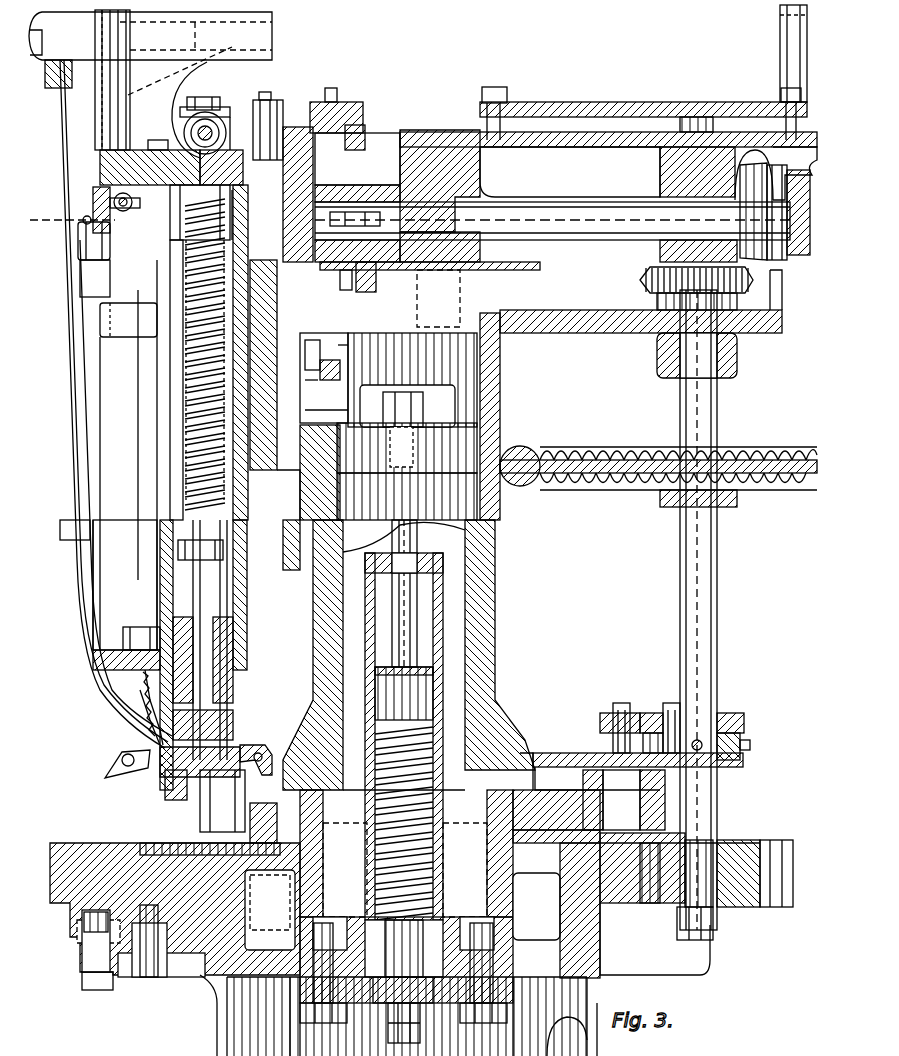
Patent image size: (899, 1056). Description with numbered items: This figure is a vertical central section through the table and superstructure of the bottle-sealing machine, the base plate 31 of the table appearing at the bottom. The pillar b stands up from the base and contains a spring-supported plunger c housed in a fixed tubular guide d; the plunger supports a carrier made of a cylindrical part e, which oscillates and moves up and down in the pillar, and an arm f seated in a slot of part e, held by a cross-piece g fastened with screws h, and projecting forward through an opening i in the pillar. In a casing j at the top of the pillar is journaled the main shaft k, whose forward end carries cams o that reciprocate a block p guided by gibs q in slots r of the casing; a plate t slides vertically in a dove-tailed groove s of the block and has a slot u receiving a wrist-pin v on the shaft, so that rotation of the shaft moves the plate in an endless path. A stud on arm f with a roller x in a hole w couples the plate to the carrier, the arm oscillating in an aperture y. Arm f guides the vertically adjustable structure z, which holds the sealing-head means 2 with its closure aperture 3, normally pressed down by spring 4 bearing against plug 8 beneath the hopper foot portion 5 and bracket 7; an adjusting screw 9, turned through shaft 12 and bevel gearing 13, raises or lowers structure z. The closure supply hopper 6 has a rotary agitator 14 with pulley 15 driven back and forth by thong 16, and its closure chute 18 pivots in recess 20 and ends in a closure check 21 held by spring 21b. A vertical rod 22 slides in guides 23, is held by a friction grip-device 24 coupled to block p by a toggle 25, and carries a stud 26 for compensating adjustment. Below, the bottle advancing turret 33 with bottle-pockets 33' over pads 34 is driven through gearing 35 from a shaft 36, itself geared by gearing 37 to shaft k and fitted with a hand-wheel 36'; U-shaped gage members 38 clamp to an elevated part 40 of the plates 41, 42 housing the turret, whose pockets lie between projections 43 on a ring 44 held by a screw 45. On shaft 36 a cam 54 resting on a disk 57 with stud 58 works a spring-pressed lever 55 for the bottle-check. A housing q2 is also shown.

The sealing-head-including means 2 is at (228, 690).
The aperture 3 is at (170, 762).
The spring 4 is at (185, 404).
The foot portion 5 is at (140, 172).
The closure supply hopper 6 is at (207, 62).
The bracket 7 is at (232, 160).
The plug 8 is at (161, 212).
The adjusting screw 9 is at (214, 100).
The shaft 12 is at (200, 128).
The bevel gearing 13 is at (235, 112).
The rotary closure agitator 14 is at (80, 62).
The pulley 15 is at (55, 80).
The thong 16 is at (62, 193).
The closure chute 18 is at (98, 492).
The recess 20 is at (125, 213).
The closure check 21 is at (126, 770).
The spring 21b is at (146, 704).
The vertical rod 22 is at (140, 595).
The guides 23 is at (123, 632).
The grip-device 24 is at (115, 285).
The toggle 25 is at (165, 330).
The stud 26 is at (92, 262).
The base plate 31 is at (78, 845).
The bottle advancing turret 33 is at (270, 910).
The bottle-pockets 33' is at (210, 829).
The pads 34 is at (170, 905).
The gearing 35 is at (665, 915).
The shaft 36 is at (712, 610).
The hand-wheel 36' is at (658, 482).
The gearing 37 is at (755, 282).
The U-shaped members 38 is at (247, 790).
The elevated part 40 is at (600, 798).
The plate 41 is at (540, 920).
The plate 42 is at (556, 753).
The radial projections 43 is at (192, 778).
The ring 44 is at (556, 816).
The screw 45 is at (275, 750).
The cam 54 is at (735, 716).
The spring-pressed lever 55 is at (610, 720).
The disk 57 is at (742, 744).
The stud 58 is at (668, 714).
The pillar b is at (495, 600).
The plunger c is at (417, 648).
The tubular guide d is at (433, 702).
The carrier part e is at (470, 678).
The arm f is at (276, 495).
The cross-piece g is at (412, 380).
The screws h is at (418, 400).
The opening i is at (295, 525).
The casing j is at (605, 335).
The main shaft k is at (605, 238).
The cams o is at (350, 276).
The block p is at (324, 378).
The gibs q is at (378, 140).
The housing q2 is at (418, 298).
The guiding slots r is at (357, 155).
The dove-tailed groove s is at (373, 277).
The plate t is at (283, 505).
The slot u is at (328, 190).
The wrist-pin v is at (237, 215).
The hole w is at (312, 378).
The roller x is at (340, 357).
The aperture y is at (310, 412).
The vertically adjustable structure z is at (247, 625).